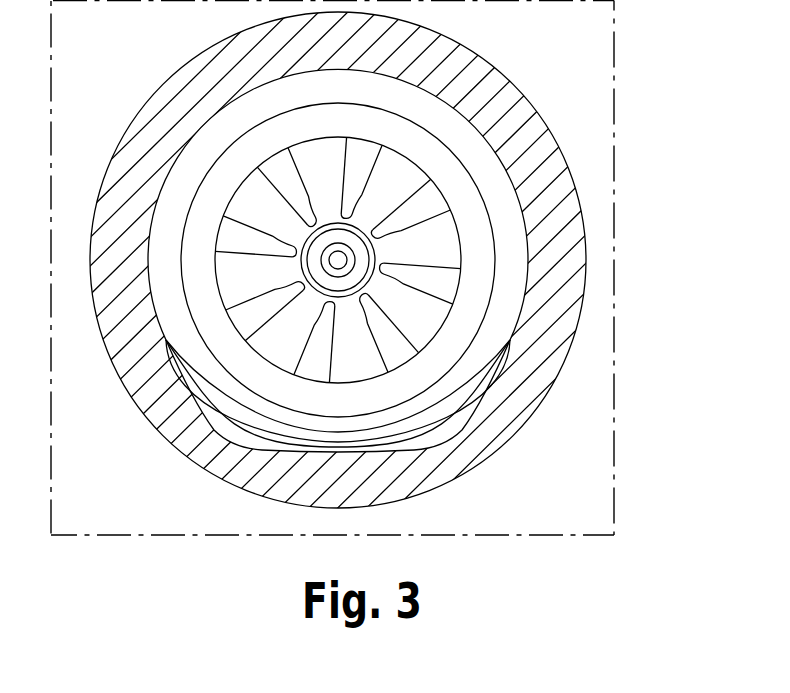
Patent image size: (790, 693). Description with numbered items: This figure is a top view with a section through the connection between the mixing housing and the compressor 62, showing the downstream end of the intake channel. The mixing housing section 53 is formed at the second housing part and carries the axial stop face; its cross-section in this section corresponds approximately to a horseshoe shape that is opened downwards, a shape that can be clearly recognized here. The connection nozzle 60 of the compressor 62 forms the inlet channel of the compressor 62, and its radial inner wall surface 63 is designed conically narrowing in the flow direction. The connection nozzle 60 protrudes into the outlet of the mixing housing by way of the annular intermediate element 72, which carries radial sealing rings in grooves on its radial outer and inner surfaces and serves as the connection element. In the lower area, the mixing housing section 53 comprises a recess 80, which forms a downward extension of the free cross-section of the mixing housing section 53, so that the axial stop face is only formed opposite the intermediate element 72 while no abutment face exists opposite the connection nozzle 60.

The mixing housing section 53 is at (558, 228).
The compressor 62 is at (422, 212).
The radial inner wall surface 63 is at (472, 148).
The connection nozzle 60 is at (386, 434).
The annular intermediate element 72 is at (450, 428).
The recess 80 is at (227, 428).